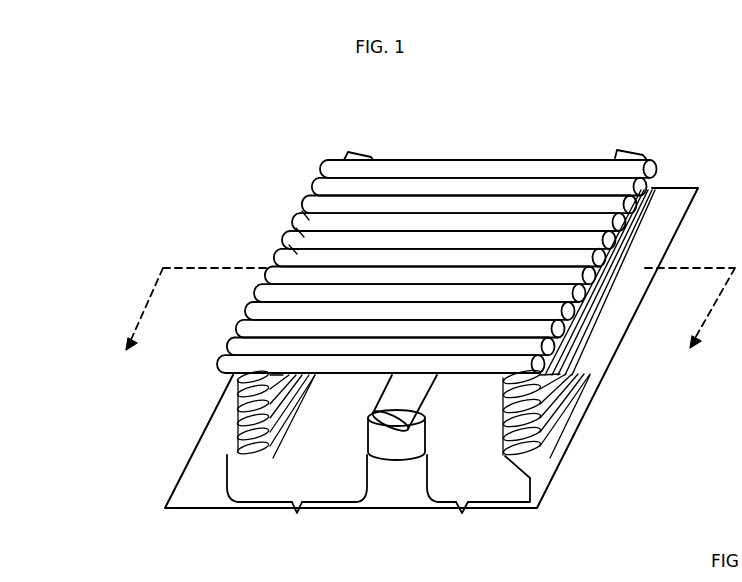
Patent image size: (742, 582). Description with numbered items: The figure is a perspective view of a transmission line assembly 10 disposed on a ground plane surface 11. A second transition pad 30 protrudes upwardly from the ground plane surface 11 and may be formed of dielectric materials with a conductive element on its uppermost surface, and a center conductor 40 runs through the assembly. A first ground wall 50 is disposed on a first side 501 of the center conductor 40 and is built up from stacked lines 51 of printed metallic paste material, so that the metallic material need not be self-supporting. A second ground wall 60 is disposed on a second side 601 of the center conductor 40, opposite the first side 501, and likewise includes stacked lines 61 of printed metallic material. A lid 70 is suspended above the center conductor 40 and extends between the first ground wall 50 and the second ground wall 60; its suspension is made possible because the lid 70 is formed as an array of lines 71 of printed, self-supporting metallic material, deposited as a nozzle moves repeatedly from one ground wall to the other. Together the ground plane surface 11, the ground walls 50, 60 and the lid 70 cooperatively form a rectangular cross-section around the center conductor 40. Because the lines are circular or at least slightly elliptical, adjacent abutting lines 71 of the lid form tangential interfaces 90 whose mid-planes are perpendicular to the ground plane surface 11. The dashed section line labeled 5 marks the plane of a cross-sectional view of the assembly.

The transmission line assembly 10 is at (288, 188).
The ground plane surface 11 is at (195, 494).
The second transition pad 30 is at (392, 447).
The center conductor 40 is at (408, 395).
The first ground wall 50 is at (243, 411).
The stacked lines 51 is at (238, 447).
The second ground wall 60 is at (530, 417).
The stacked lines 61 is at (532, 455).
The lid 70 is at (287, 311).
The lines 71 is at (292, 250).
The tangential interfaces 90 is at (320, 175).
The first side 501 is at (297, 514).
The second side 601 is at (462, 516).
The section line 5 is at (422, 318).